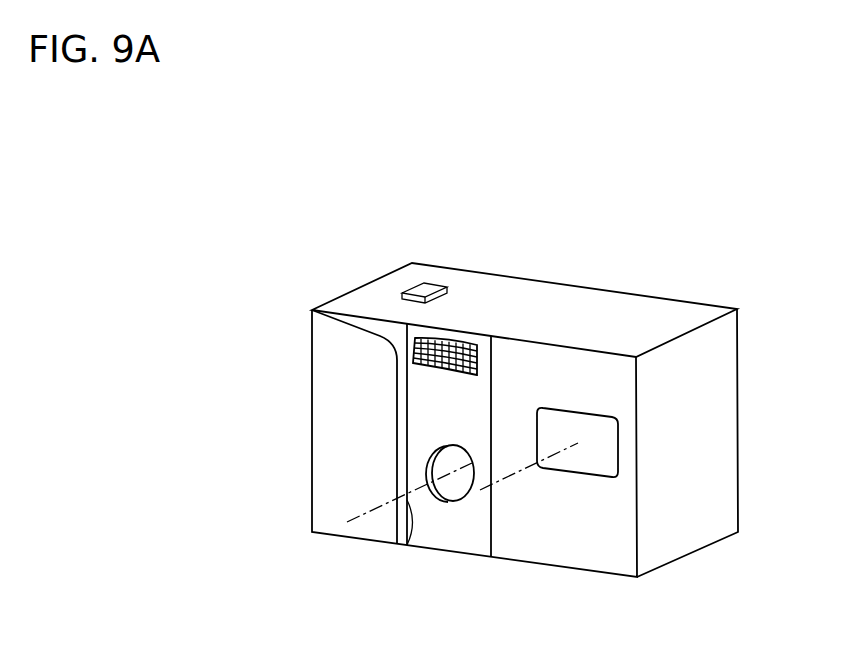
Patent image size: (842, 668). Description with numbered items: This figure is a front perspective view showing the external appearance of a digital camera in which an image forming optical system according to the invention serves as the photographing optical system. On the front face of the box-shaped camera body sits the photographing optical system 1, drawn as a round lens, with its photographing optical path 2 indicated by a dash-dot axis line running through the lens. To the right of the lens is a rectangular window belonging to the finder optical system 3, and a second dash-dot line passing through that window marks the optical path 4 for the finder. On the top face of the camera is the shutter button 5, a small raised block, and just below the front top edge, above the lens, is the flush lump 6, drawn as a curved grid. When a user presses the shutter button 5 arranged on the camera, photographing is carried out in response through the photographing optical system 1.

The photographing optical system 1 is at (450, 493).
The photographing optical path 2 is at (398, 554).
The finder optical system 3 is at (597, 447).
The optical path for finder 4 is at (537, 465).
The shutter button 5 is at (426, 290).
The flush lump 6 is at (445, 338).